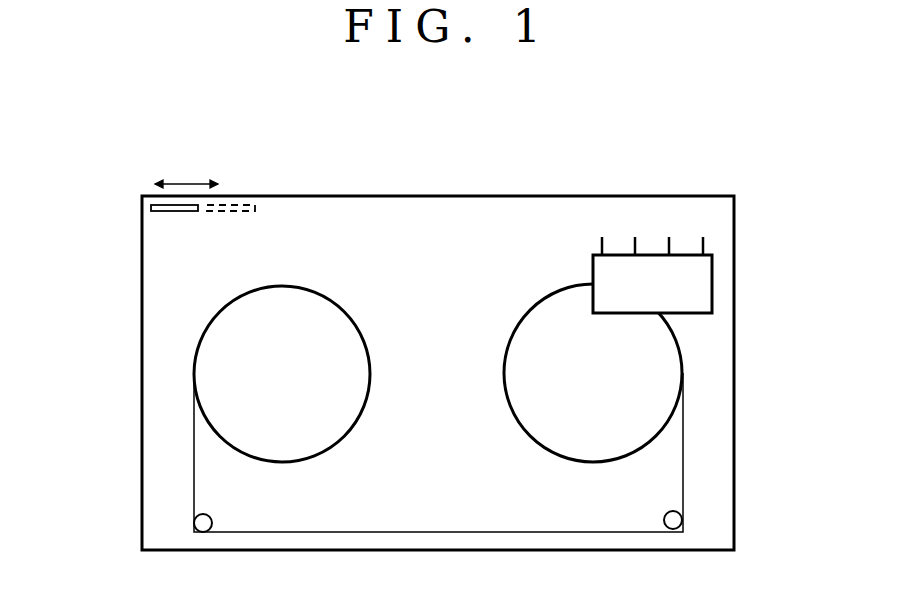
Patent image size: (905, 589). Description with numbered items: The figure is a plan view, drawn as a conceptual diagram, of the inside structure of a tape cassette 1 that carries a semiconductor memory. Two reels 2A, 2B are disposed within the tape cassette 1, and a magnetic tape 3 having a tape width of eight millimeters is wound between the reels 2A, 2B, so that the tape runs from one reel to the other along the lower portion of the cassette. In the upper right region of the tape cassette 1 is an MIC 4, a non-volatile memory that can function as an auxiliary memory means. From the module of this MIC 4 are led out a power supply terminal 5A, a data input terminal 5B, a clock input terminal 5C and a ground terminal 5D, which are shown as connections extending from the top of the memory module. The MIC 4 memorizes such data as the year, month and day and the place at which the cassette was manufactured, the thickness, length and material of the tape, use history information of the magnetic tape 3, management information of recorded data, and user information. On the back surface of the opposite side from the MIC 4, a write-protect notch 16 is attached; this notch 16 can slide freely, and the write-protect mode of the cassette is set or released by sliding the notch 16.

The tape cassette 1 is at (364, 196).
The write-protect notch 16 is at (178, 212).
The reel 2A is at (338, 298).
The reel 2B is at (527, 315).
The magnetic tape 3 is at (194, 469).
The MIC 4 is at (712, 283).
The power supply terminal 5A is at (703, 237).
The data input terminal 5B is at (669, 237).
The clock input terminal 5C is at (635, 237).
The ground terminal 5D is at (602, 237).